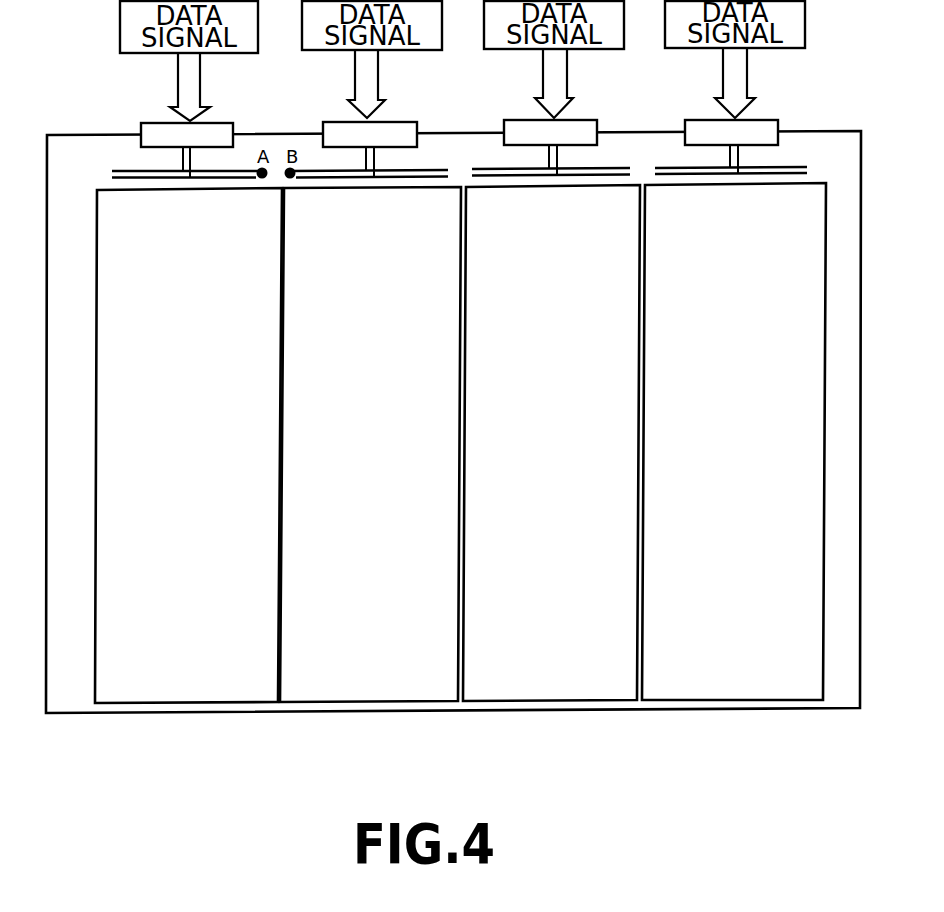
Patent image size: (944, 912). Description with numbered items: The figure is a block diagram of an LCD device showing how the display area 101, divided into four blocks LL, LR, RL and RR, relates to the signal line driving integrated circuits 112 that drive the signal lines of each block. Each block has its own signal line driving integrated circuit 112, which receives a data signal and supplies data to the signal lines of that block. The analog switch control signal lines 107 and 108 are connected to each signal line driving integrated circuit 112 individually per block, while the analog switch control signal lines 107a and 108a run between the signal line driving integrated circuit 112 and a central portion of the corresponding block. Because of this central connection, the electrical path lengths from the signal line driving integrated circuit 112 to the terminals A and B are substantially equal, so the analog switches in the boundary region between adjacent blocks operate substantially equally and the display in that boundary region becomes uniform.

The display area 101 is at (382, 708).
The analog switch control signal line 107 is at (125, 168).
The analog switch control signal line 107a is at (192, 156).
The analog switch control signal line 108 is at (123, 180).
The analog switch control signal line 108a is at (188, 160).
The signal line driving integrated circuit 112 is at (150, 122).